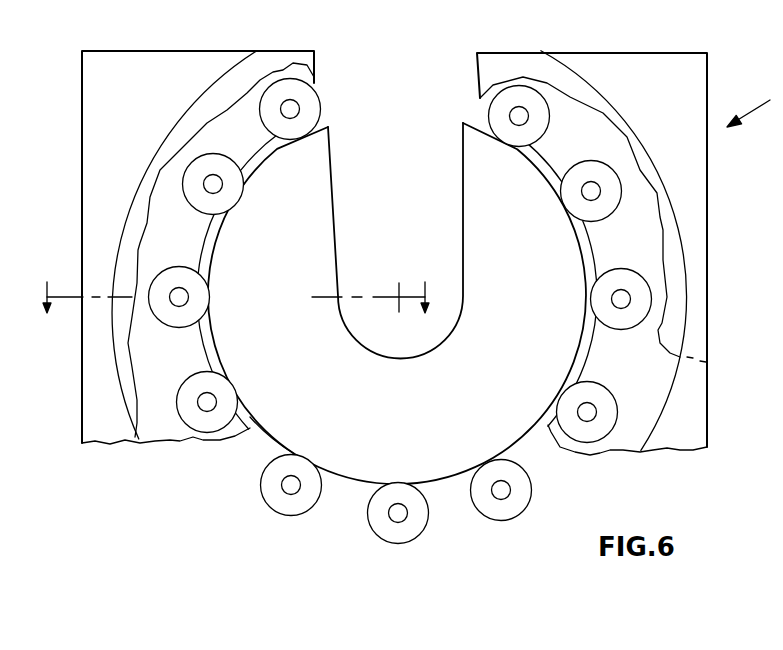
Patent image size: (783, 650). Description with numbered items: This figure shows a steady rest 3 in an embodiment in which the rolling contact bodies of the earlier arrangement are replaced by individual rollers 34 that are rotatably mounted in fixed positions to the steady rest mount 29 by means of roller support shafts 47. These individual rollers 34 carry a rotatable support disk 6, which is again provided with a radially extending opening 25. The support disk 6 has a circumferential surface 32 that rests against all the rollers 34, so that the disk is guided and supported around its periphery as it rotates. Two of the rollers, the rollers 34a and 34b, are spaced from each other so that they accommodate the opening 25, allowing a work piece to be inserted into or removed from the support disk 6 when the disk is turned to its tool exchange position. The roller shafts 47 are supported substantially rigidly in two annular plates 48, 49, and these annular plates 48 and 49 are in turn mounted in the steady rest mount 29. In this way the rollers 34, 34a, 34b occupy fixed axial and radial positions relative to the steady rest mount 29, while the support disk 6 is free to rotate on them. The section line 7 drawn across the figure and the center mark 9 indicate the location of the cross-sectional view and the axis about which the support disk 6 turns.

The steady rest 3 is at (751, 109).
The support disk 6 is at (397, 254).
The section line 7- 7 is at (236, 316).
The axis of rotation 9 is at (400, 300).
The radially extending opening 25 is at (413, 127).
The steady rest mount 29 is at (700, 270).
The circumferential surface 32 is at (268, 433).
The individual rollers 34 is at (482, 507).
The roller 34a is at (313, 110).
The roller 34b is at (498, 110).
The roller support shaft 47 is at (288, 487).
The annular plate 48 is at (141, 210).
The annular plate 49 is at (153, 430).